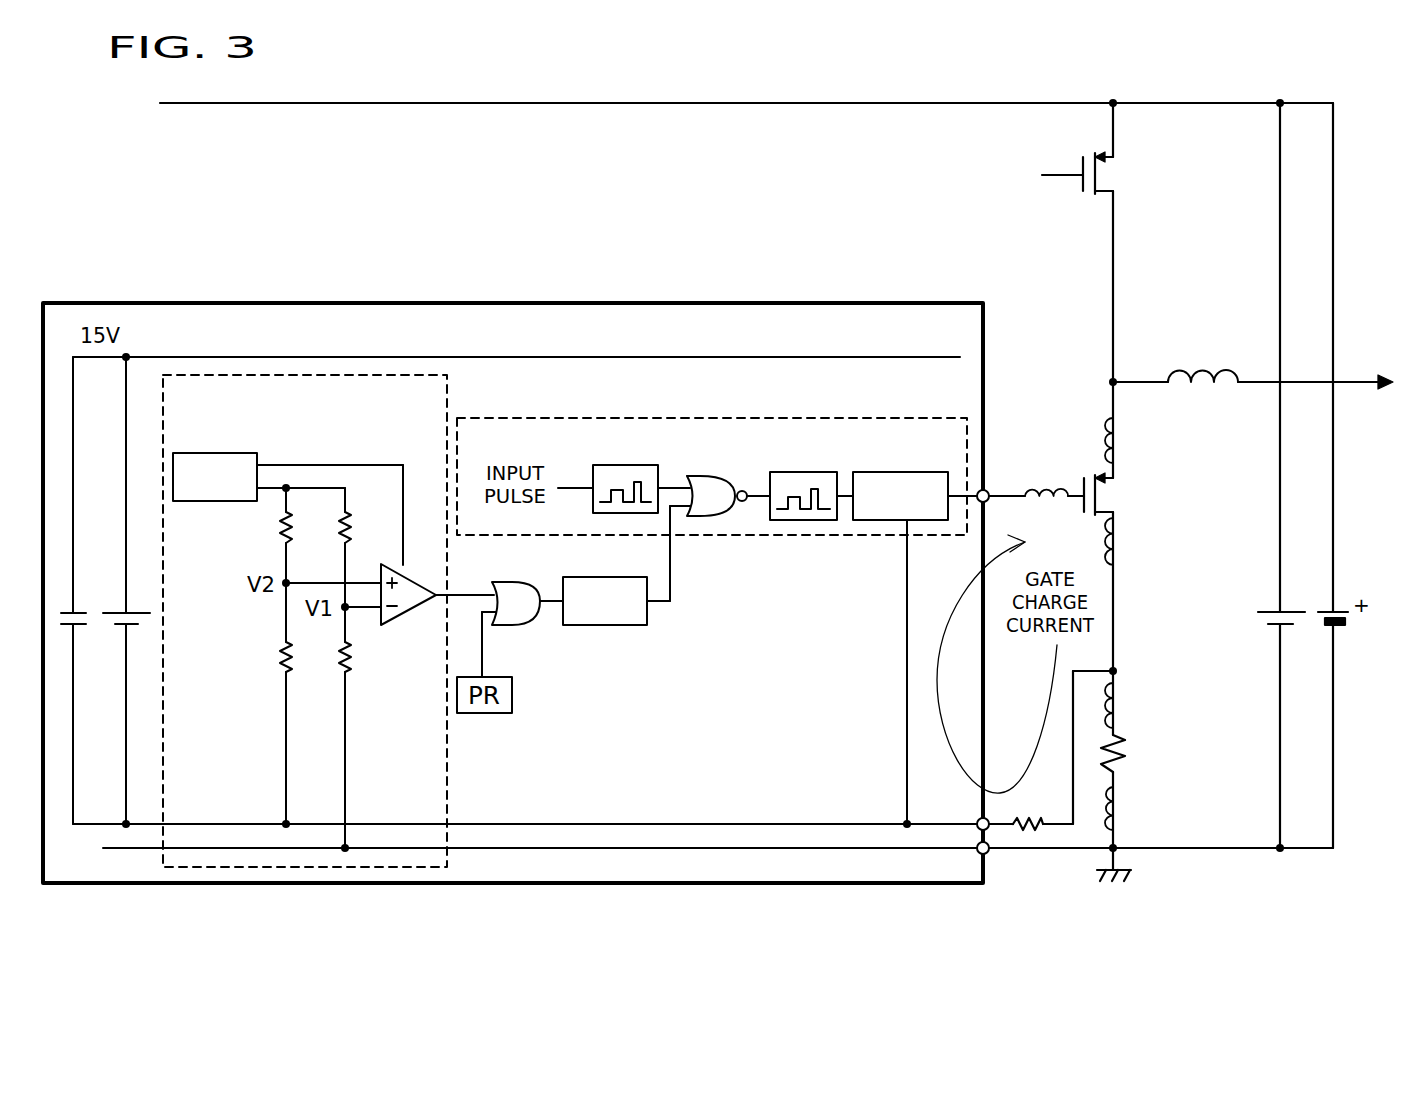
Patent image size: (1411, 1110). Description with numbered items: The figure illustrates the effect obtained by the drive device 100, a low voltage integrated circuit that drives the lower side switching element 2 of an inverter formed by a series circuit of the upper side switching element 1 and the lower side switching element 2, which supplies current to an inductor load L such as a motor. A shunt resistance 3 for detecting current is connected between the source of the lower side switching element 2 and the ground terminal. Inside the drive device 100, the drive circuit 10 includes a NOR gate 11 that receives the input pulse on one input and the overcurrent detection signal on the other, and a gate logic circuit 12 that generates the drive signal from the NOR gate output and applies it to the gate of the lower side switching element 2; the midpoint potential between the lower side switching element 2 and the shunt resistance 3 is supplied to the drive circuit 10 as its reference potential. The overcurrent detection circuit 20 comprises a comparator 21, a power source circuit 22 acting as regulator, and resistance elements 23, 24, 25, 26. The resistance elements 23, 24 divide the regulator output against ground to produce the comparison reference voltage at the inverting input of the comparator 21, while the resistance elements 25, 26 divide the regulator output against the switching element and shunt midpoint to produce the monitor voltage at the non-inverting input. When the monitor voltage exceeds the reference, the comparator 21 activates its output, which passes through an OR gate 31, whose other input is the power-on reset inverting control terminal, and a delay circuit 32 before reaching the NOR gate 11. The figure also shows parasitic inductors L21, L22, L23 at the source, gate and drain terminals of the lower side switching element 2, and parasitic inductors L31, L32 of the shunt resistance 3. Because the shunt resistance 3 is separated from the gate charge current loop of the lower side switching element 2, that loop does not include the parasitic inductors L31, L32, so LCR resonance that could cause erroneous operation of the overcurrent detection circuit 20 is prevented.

The upper side switching element 1 is at (1120, 174).
The lower side switching element 2 is at (1122, 492).
The shunt resistance 3 is at (1125, 757).
The drive circuit 10 is at (905, 418).
The NOR gate 11 is at (710, 517).
The gate logic circuit 12 is at (873, 521).
The overcurrent detection circuit 20 is at (448, 388).
The comparator 21 is at (401, 625).
The power source circuit 22 is at (237, 453).
The resistance element 23 is at (343, 521).
The resistance element 24 is at (343, 656).
The resistance element 25 is at (283, 521).
The resistance element 26 is at (283, 656).
The OR gate 31 is at (520, 626).
The delay circuit 32 is at (628, 626).
The drive device 100 is at (910, 303).
The inductor load L is at (1203, 360).
The parasitic inductor L21 is at (1140, 541).
The parasitic inductor L22 is at (1046, 475).
The parasitic inductor L23 is at (1140, 440).
The parasitic inductor L31 is at (1140, 705).
The parasitic inductor L32 is at (1140, 808).